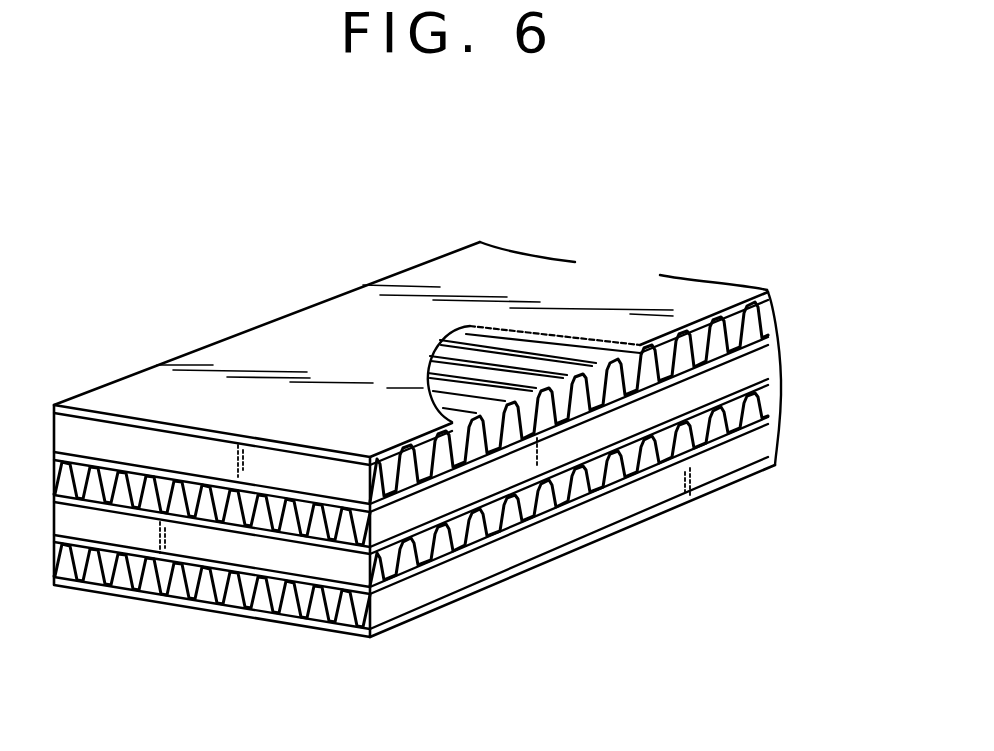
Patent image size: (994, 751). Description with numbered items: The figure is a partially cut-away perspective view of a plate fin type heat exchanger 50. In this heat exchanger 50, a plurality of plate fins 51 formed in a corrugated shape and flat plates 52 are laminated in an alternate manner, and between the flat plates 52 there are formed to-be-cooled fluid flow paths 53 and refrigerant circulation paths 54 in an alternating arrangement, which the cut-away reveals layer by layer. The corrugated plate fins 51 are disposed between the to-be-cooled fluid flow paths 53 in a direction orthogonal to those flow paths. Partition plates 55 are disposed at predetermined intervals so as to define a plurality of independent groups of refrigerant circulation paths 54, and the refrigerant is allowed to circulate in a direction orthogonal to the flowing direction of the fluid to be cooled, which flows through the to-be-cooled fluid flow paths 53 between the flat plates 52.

The plate fin type heat exchanger 50 is at (260, 296).
The plate fin 51 is at (773, 311).
The flat plate 52 is at (440, 265).
The to-be-cooled fluid flow path 53 is at (250, 490).
The refrigerant circulation path 54 is at (693, 330).
The partition plate 55 is at (555, 365).